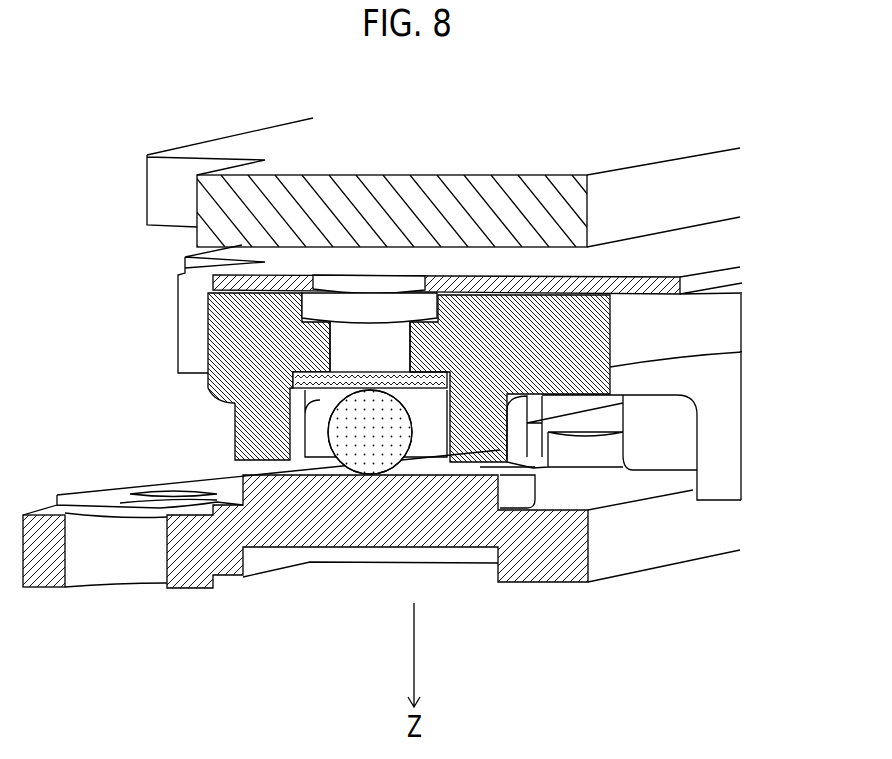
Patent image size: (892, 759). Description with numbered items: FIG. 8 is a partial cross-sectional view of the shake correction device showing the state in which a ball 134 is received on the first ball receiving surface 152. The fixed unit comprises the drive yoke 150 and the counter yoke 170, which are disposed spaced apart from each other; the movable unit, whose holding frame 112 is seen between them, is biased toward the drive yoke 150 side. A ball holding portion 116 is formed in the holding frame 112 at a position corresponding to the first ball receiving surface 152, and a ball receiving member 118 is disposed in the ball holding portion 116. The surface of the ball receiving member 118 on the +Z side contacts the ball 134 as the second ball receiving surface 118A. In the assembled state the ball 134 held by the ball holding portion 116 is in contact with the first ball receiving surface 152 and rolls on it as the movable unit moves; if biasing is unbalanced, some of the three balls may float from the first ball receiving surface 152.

The counter yoke 170 is at (400, 195).
The ball receiving member 118 is at (290, 377).
The second ball receiving surface 118A is at (305, 415).
The ball holding portion 116 is at (268, 432).
The holding frame 112 is at (590, 358).
The ball 134 is at (355, 447).
The drive yoke 150 is at (541, 547).
The first ball receiving surface 152 is at (533, 468).